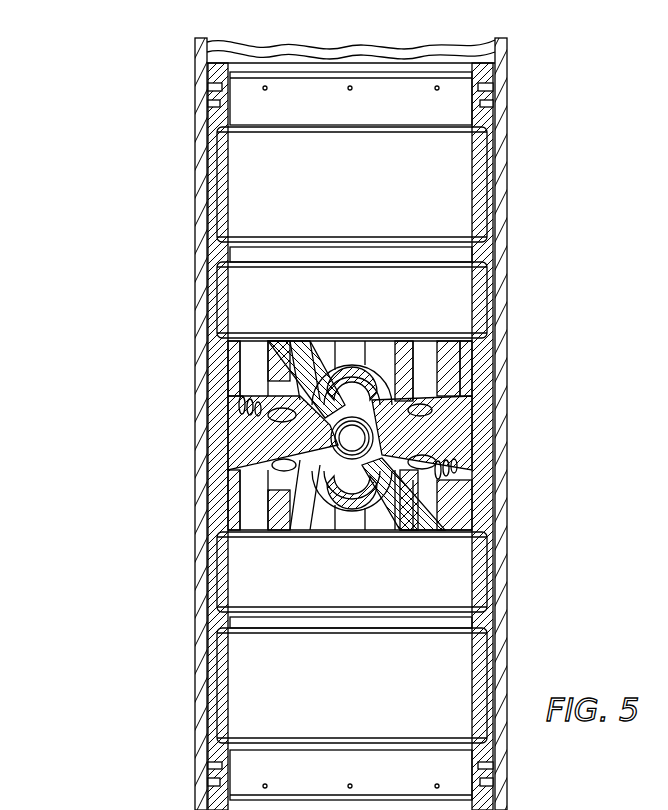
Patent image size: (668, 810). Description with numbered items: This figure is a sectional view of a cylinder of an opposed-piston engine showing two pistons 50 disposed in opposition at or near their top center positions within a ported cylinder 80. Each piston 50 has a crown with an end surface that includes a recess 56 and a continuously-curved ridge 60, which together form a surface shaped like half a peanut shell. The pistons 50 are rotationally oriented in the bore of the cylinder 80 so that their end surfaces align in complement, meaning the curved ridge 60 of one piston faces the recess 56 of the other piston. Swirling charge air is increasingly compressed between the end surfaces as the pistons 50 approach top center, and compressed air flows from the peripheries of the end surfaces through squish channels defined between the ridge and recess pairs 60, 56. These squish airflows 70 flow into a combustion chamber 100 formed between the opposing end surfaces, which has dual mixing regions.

The piston 50 is at (500, 207).
The ported cylinder 80 is at (197, 547).
The squish airflows 70 is at (333, 403).
The combustion chamber 100 is at (365, 413).
The continuously-curved ridge 60 is at (314, 433).
The recess 56 is at (313, 425).